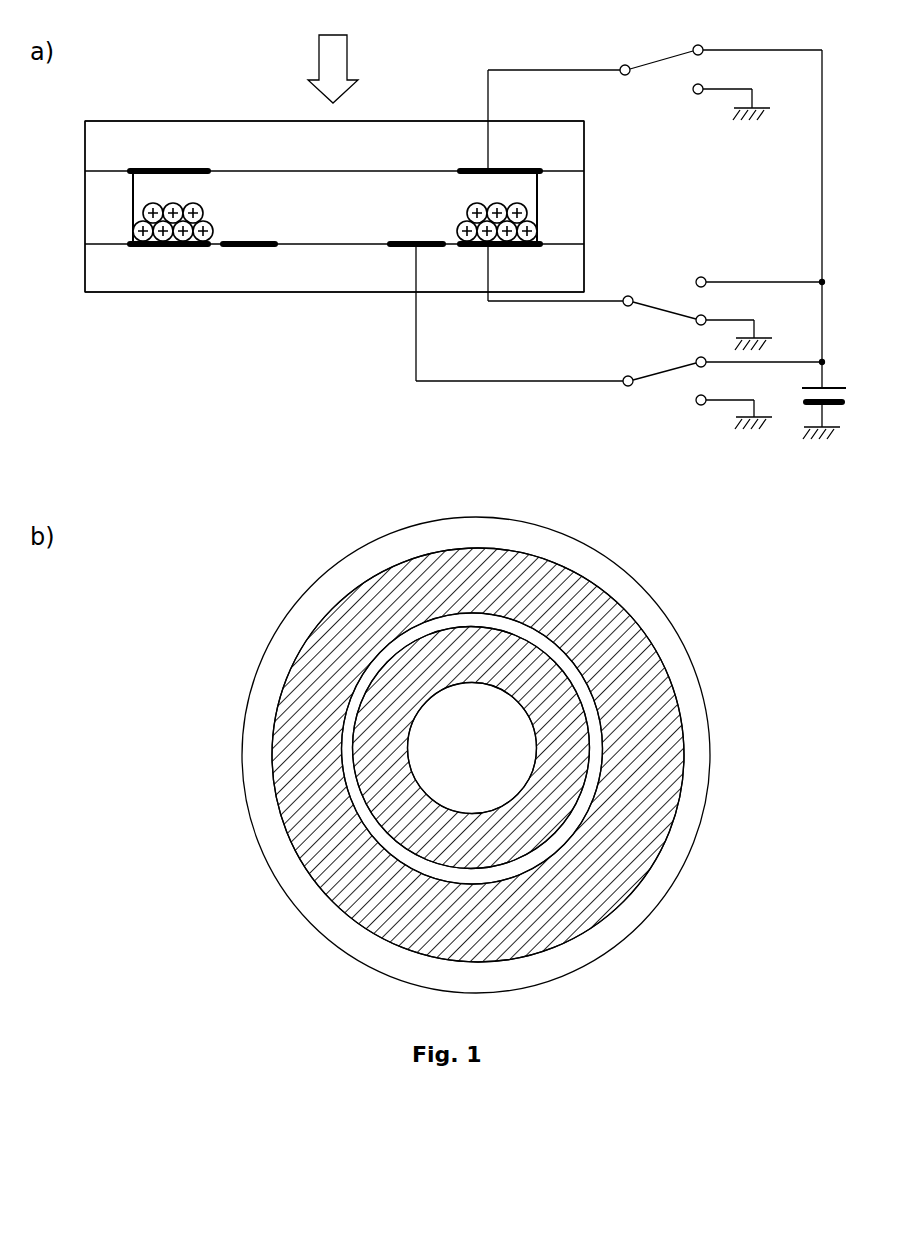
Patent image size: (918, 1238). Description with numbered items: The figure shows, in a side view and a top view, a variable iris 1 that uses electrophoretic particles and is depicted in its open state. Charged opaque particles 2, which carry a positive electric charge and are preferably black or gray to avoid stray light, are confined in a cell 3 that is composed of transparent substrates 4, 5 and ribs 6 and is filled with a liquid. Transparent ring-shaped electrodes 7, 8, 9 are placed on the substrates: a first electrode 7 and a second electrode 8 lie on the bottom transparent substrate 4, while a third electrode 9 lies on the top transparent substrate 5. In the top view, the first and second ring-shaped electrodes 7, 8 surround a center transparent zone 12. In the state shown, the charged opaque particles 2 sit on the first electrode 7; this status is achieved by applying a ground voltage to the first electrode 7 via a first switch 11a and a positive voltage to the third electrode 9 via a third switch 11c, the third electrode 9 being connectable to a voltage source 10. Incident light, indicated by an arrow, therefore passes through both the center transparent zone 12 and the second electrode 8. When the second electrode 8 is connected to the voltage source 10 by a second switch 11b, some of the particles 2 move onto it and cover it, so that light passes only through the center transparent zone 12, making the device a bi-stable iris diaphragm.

The variable iris 1 is at (220, 46).
The charged opaque particles 2 is at (215, 225).
The cell 3 is at (303, 183).
The bottom transparent substrate 4 is at (320, 293).
The top transparent substrate 5 is at (368, 119).
The ribs 6 is at (85, 216).
The first electrode 7 is at (178, 250).
The second electrode 8 is at (252, 250).
The third electrode 9 is at (167, 164).
The voltage source 10 is at (802, 396).
The first switch 11a is at (666, 313).
The second switch 11b is at (668, 390).
The third switch 11c is at (665, 78).
The center transparent zone 12 is at (407, 745).